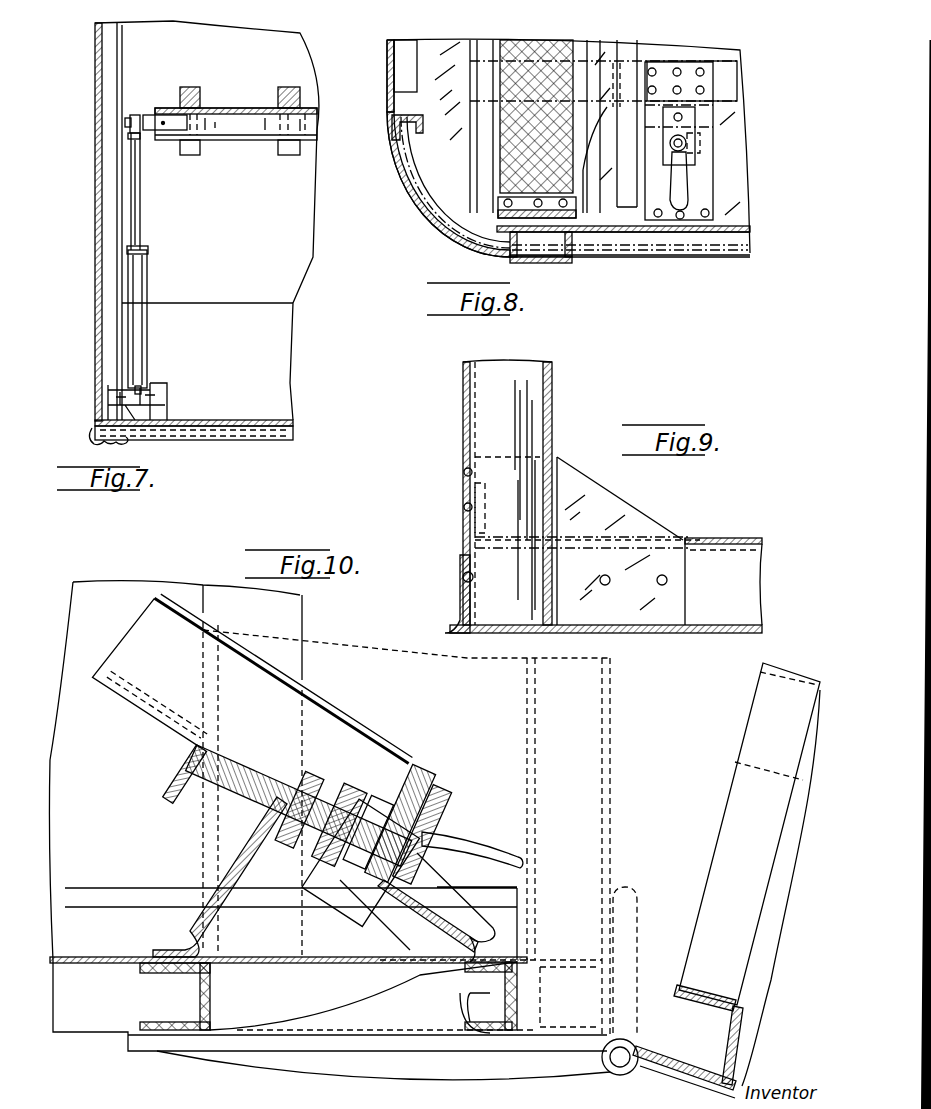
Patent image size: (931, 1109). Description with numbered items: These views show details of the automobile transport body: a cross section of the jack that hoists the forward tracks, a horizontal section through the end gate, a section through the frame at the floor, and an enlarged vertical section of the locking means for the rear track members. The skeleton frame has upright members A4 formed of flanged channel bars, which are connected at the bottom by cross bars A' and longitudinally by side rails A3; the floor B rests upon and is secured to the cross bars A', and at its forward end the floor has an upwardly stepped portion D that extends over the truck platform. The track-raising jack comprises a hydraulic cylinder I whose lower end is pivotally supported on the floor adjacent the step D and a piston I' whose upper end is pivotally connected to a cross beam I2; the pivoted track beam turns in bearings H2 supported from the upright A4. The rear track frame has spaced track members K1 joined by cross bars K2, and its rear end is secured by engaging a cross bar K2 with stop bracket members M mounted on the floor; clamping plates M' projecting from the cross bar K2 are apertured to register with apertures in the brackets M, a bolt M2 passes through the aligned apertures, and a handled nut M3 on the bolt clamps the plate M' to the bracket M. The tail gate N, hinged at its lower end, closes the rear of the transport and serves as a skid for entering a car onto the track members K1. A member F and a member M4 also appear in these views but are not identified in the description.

In FIG. 7, the cross bars A' is at (191, 451).
In FIG. 9, the cross bars A' is at (618, 585).
In FIG. 9, the side rails A3 is at (460, 603).
In FIG. 7, the upright members A4 is at (108, 115).
In FIG. 9, the upright members A4 is at (550, 408).
In FIG. 7, the floor B is at (273, 418).
In FIG. 8, the floor B is at (747, 210).
In FIG. 9, the floor B is at (763, 538).
In FIG. 10, the floor B is at (107, 967).
In FIG. 7, the upwardly stepped portion D is at (260, 300).
In FIG. 7, the post F is at (95, 200).
In FIG. 9, the post F is at (465, 437).
In FIG. 7, the bearings H2 is at (240, 107).
In FIG. 7, the cylinders I is at (147, 285).
In FIG. 7, the pistons I' is at (153, 182).
In FIG. 7, the cross beam I2 is at (313, 120).
In FIG. 8, the track members K1 is at (480, 165).
In FIG. 8, the cross bars K2 is at (730, 73).
In FIG. 10, the cross bars K2 is at (177, 780).
In FIG. 10, the stop bracket members M is at (240, 873).
In FIG. 8, the clamping plates M' is at (720, 141).
In FIG. 10, the clamping plates M' is at (356, 775).
In FIG. 8, the bolt M2 is at (690, 145).
In FIG. 10, the bolt M2 is at (407, 837).
In FIG. 8, the handled nut M3 is at (687, 183).
In FIG. 10, the handled nut M3 is at (413, 817).
In FIG. 8, the curved channel M4 is at (438, 233).
In FIG. 8, the tail gate N is at (673, 257).
In FIG. 10, the tail gate N is at (620, 806).